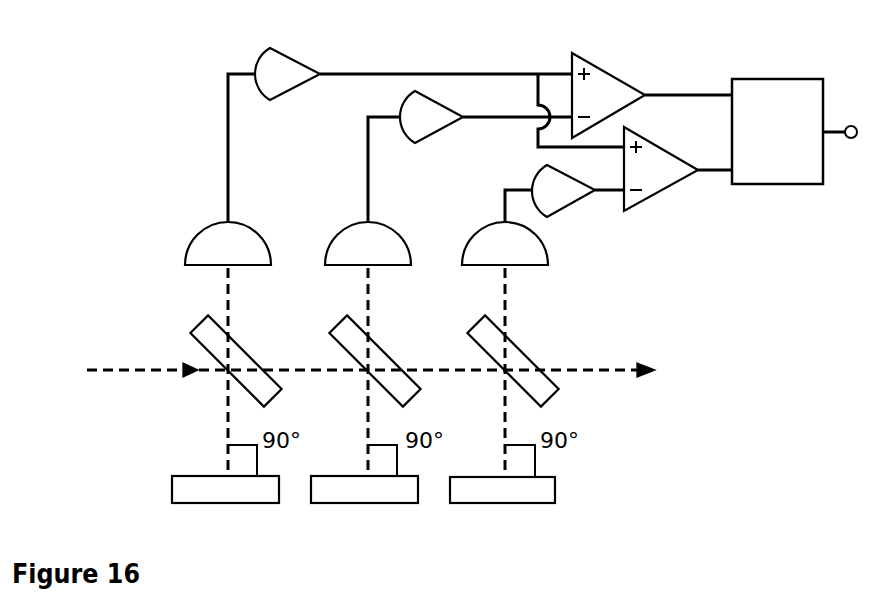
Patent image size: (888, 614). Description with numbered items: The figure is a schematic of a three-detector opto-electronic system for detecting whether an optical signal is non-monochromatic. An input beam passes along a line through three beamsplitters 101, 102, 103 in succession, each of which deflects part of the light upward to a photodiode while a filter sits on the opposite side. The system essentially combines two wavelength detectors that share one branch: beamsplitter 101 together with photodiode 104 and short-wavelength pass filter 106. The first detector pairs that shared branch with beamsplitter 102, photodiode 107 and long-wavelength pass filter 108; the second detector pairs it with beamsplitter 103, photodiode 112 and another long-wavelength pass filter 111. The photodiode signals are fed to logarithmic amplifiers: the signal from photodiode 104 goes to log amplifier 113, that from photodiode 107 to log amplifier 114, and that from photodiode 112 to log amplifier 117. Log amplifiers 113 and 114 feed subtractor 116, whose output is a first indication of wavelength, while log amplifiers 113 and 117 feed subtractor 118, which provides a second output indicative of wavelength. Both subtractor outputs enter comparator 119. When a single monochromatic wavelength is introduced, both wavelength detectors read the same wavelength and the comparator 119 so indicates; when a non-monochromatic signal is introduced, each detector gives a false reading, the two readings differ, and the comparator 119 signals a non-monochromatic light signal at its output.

The beamsplitter 101 is at (240, 368).
The beamsplitter 102 is at (380, 368).
The beamsplitter 103 is at (522, 368).
The photodiode 104 is at (233, 243).
The short-wavelength pass filter 106 is at (192, 487).
The photodiode 107 is at (373, 243).
The long-wavelength pass filter 108 is at (357, 490).
The long-wavelength pass filter 111 is at (550, 487).
The photodiode 112 is at (527, 250).
The log amplifier 113 is at (278, 70).
The log amplifier 114 is at (427, 114).
The subtractor 116 is at (603, 95).
The log amplifier 117 is at (552, 190).
The subtractor 118 is at (658, 180).
The comparator 119 is at (762, 90).